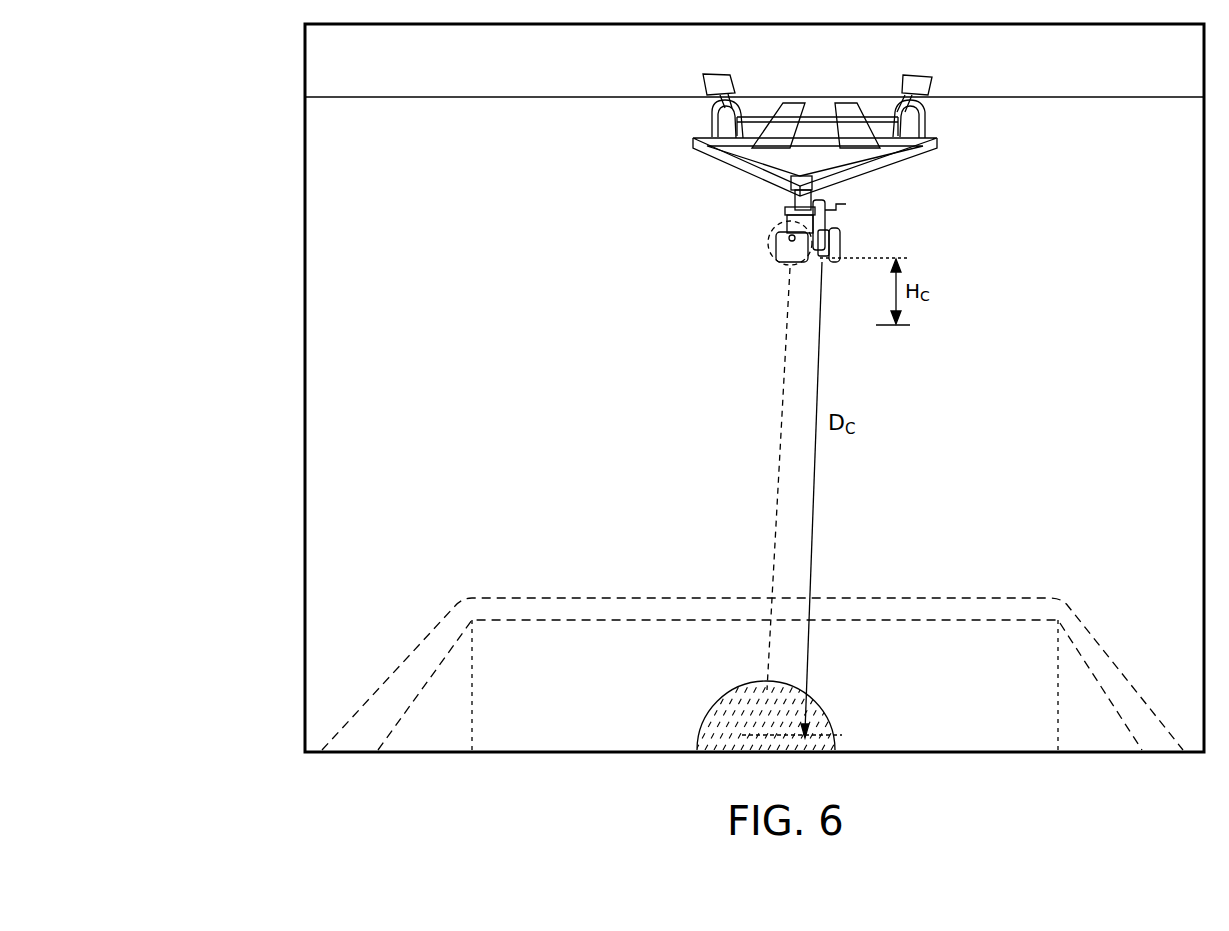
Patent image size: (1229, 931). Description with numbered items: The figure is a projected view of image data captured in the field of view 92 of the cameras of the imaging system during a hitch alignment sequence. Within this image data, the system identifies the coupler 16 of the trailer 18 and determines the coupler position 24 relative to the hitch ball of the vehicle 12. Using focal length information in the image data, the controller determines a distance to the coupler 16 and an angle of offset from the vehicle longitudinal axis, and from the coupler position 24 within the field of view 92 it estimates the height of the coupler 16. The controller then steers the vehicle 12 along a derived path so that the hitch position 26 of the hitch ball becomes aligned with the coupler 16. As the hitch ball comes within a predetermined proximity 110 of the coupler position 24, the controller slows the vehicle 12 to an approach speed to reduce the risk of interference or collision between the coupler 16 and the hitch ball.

The field of view 92 is at (305, 97).
The trailer 18 is at (700, 138).
The coupler position 24 is at (768, 243).
The coupler 16 is at (782, 264).
The vehicle 12 is at (457, 598).
The hitch position 26 is at (738, 703).
The proximity 110 is at (703, 726).